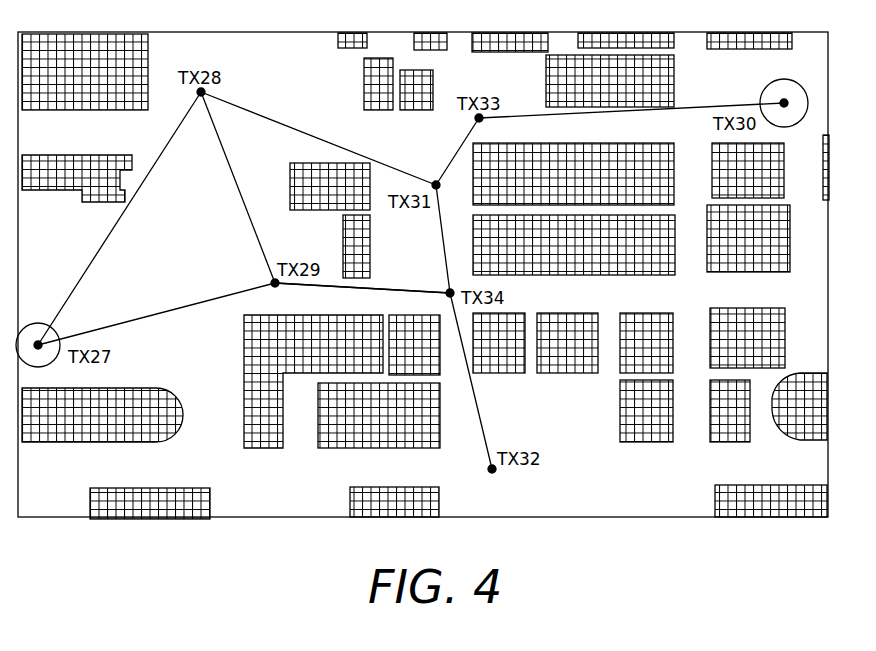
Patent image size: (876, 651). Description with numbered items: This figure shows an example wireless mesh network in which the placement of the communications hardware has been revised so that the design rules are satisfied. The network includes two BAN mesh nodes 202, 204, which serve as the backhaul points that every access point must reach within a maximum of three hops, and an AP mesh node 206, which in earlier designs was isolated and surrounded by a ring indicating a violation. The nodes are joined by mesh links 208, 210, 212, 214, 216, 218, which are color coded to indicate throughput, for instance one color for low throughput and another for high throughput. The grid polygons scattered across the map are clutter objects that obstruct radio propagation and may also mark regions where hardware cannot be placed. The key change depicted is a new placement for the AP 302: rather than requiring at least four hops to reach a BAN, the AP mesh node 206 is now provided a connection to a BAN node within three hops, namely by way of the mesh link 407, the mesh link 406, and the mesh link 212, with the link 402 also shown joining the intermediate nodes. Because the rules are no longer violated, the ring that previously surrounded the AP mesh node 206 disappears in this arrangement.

The BAN mesh node 202 is at (42, 322).
The BAN mesh node 204 is at (786, 79).
The AP mesh node 206 is at (494, 475).
The mesh link 208 is at (100, 253).
The mesh link 210 is at (237, 187).
The mesh link 212 is at (157, 316).
The mesh link 214 is at (321, 138).
The mesh link 216 is at (460, 148).
The mesh link 218 is at (699, 106).
The AP 302 is at (445, 290).
The link TX31-TX34 402 is at (441, 238).
The mesh link 406 is at (328, 287).
The link TX34-TX32 407 is at (476, 398).